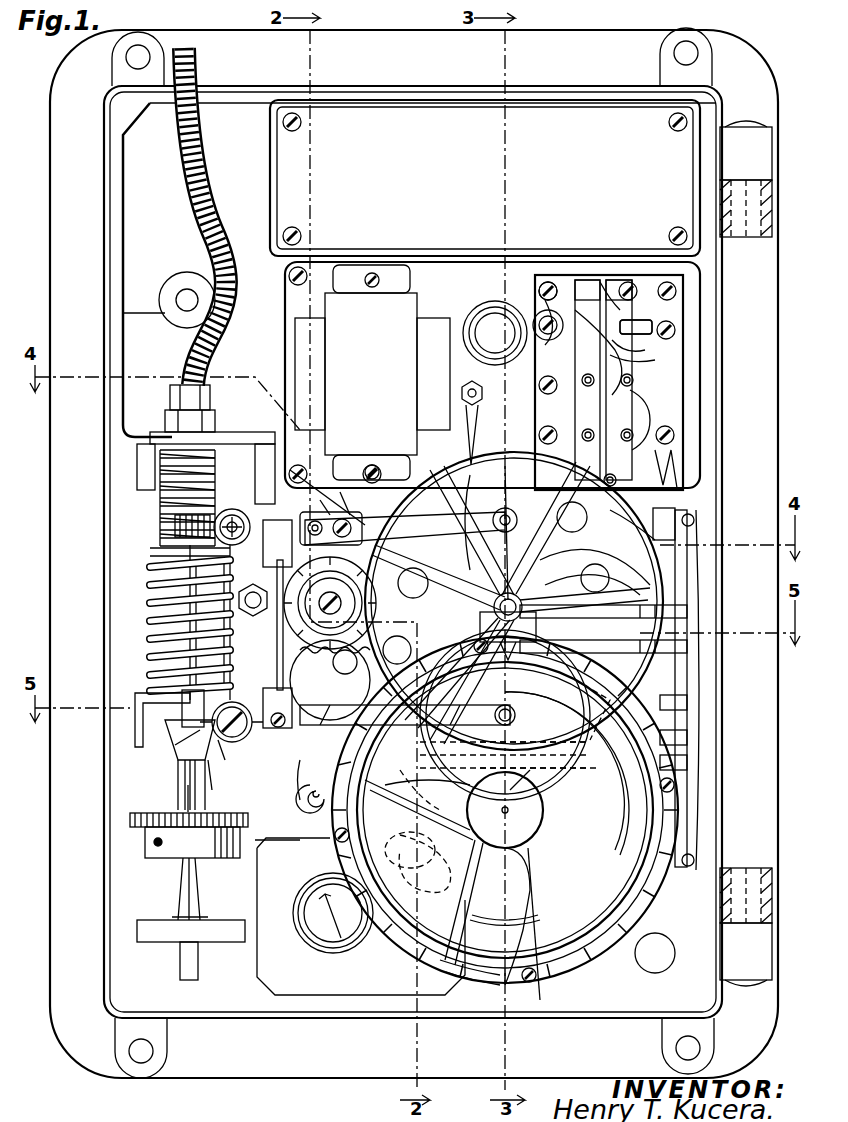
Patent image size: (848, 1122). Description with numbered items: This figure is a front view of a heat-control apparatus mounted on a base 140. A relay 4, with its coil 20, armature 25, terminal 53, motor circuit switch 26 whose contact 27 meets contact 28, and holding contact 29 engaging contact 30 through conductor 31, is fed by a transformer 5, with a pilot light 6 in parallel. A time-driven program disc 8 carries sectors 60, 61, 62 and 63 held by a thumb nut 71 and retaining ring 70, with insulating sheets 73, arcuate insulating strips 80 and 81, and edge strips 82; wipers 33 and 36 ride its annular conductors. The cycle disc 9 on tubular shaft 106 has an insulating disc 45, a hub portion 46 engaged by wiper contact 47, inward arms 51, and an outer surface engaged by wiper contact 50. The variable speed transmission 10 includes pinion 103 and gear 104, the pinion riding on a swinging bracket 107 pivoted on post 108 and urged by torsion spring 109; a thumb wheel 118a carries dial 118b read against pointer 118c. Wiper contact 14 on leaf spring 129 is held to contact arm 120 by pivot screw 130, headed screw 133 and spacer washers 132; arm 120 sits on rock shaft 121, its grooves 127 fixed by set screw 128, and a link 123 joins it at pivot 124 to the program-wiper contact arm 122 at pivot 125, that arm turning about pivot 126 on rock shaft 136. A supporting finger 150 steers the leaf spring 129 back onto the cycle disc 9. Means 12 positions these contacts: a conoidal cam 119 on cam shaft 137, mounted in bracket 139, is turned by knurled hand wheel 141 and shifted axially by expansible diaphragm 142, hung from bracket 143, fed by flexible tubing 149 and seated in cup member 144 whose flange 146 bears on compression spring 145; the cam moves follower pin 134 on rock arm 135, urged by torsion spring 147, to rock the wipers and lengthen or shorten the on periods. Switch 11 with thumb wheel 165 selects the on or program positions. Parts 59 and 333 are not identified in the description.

The base 140 is at (99, 1038).
The flexible tubing 149 is at (182, 165).
The bracket 143 is at (150, 452).
The expansible diaphragm member 142 is at (165, 480).
The annular grooves 127 is at (175, 525).
The flange 146 is at (150, 548).
The coil compression spring 145 is at (150, 582).
The cup-like member 144 is at (147, 625).
The pivot 126 is at (190, 690).
The rock shaft 136 is at (135, 730).
The torsion spring 147 is at (165, 738).
The double-acting cam member 119 is at (178, 740).
The means controllable by weather conditions and manually 12 is at (166, 781).
The follower pin 134 is at (192, 780).
The cam shaft 137 is at (185, 808).
The knurled hand wheel 141 is at (150, 828).
The bracket 139 is at (137, 930).
The set screw 128 is at (232, 508).
The rock shaft 121 is at (244, 494).
The contact arm 120 is at (290, 468).
The pivot 124 is at (320, 498).
The spacer washers 132 is at (345, 495).
The headed screw 133 is at (390, 476).
The pivot screw 130 is at (330, 518).
The pointer 118c is at (280, 582).
The link 123 is at (277, 636).
The gear 104 is at (300, 660).
The pinion 103 is at (292, 682).
The contact arm 122 is at (240, 740).
The rock arm 135 is at (242, 763).
The pivot 125 is at (237, 783).
The variable speed transmission 10 is at (312, 780).
The coil torsion spring 109 is at (300, 838).
The thumb wheel 165 is at (322, 940).
The switch 11 is at (332, 1002).
The transformer 5 is at (418, 318).
The pilot light 6 is at (493, 322).
The supporting finger 150 is at (478, 420).
The relay armature 25 is at (490, 392).
The leaf spring member 129 is at (468, 478).
The wiper contact 14 is at (507, 470).
The dial 118b is at (440, 515).
The thumb wheel 118a is at (445, 545).
The tubular shaft 106 is at (507, 592).
The arms 51 is at (430, 590).
The terminal 53 is at (548, 280).
The terminal strip 59 is at (588, 282).
The contact 30 is at (612, 282).
The relay 4 is at (612, 278).
The contact 28 is at (640, 322).
The contact 27 is at (660, 350).
The armature-controlled contact 29 is at (665, 362).
The motor circuit switch 26 is at (647, 419).
The relay coil 20 is at (683, 440).
The cycle circuit-controlling disc 9 is at (628, 530).
The conductor 31 is at (588, 512).
The insulating disc 45 is at (595, 557).
The central hub portion 46 is at (615, 575).
The wiper contact 47 is at (580, 578).
The contact wiper 36 is at (505, 715).
The wiper contact 33 is at (560, 694).
The sheets of insulation 73 is at (515, 716).
The slide edge 333 is at (525, 739).
The wiper contact 50 is at (505, 766).
The arcuate insulating strips 80 is at (395, 745).
The swinging bracket 107 is at (455, 798).
The sector 60 is at (505, 810).
The sector 61 is at (525, 793).
The thumb nut 71 is at (480, 832).
The night-off contact sector 62 is at (522, 910).
The insulating strips 82 is at (500, 895).
The pivot post 108 is at (465, 893).
The arcuate insulating strip 81 is at (505, 960).
The heating-up sector 63 is at (500, 930).
The program circuit-controlling disc 8 is at (578, 962).
The retaining ring 70 is at (652, 972).